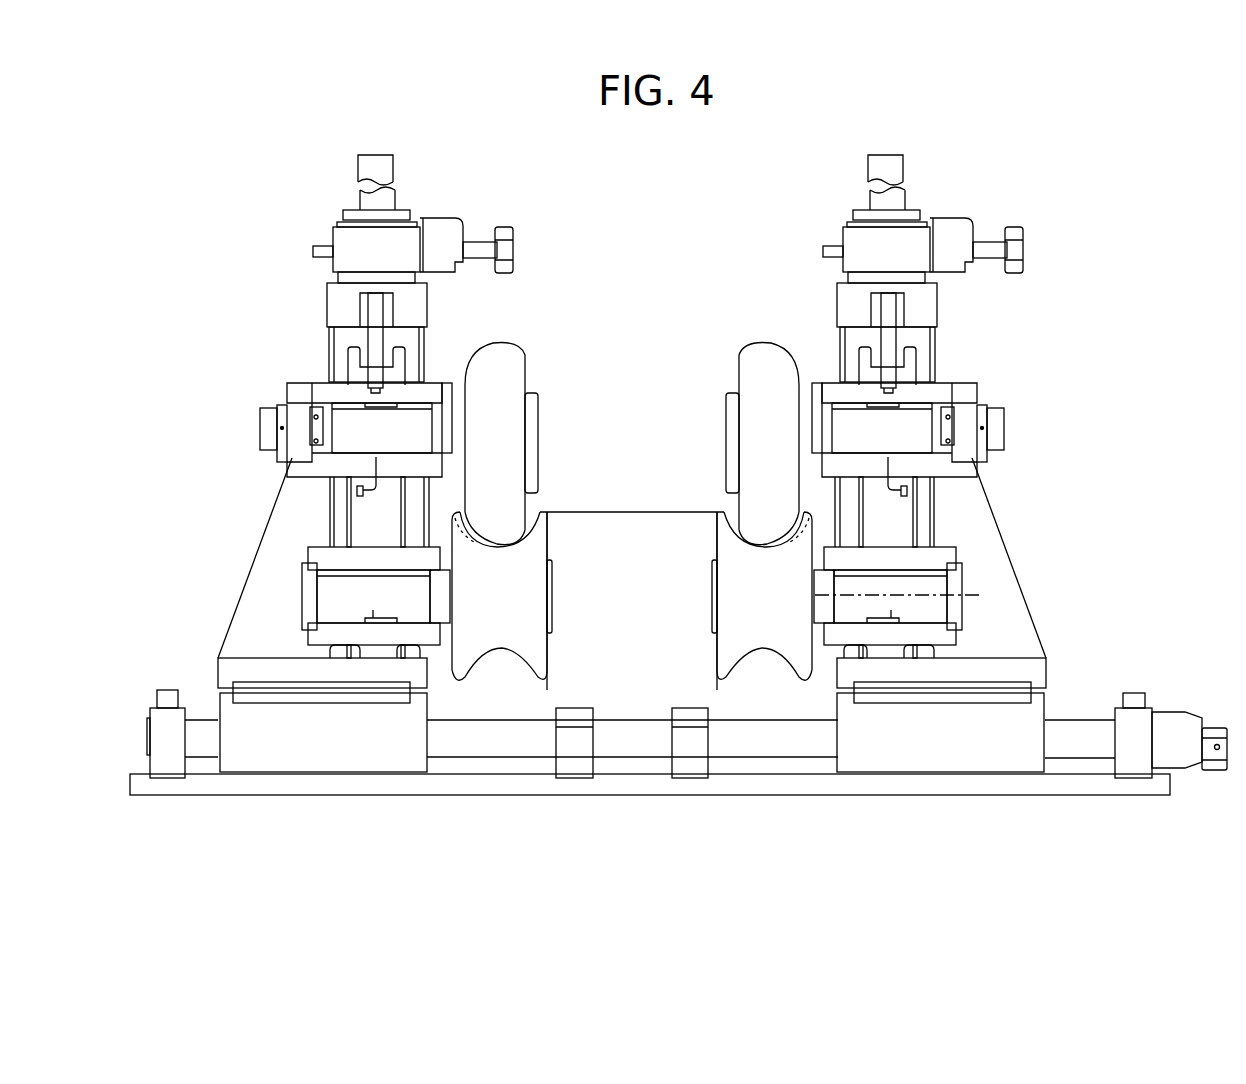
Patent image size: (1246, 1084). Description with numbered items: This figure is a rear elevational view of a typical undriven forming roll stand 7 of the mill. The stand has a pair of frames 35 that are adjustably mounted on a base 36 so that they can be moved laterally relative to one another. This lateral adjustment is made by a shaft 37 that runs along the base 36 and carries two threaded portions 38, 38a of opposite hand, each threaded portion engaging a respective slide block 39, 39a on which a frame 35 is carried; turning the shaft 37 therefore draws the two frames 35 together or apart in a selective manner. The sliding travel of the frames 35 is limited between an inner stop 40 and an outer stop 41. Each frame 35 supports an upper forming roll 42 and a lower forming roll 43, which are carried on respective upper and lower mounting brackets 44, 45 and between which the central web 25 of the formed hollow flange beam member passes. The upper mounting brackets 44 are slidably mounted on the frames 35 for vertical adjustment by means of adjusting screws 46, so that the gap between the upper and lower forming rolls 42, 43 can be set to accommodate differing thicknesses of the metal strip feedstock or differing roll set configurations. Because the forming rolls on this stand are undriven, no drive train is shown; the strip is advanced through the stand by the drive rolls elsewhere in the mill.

The undriven forming roll stand 7 is at (1140, 140).
The central web 25 is at (592, 510).
The frames 35 is at (922, 368).
The base 36 is at (545, 783).
The shaft 37 is at (678, 737).
The threaded portion 38 is at (547, 737).
The threaded portion 38a is at (717, 740).
The slide block 39 is at (310, 735).
The slide block 39a is at (945, 740).
The inner stop 40 is at (627, 740).
The outer stop 41 is at (167, 752).
The upper forming roll 42 is at (510, 358).
The lower forming roll 43 is at (456, 680).
The upper mounting bracket 44 is at (305, 398).
The lower mounting bracket 45 is at (335, 558).
The adjusting screw 46 is at (1005, 237).